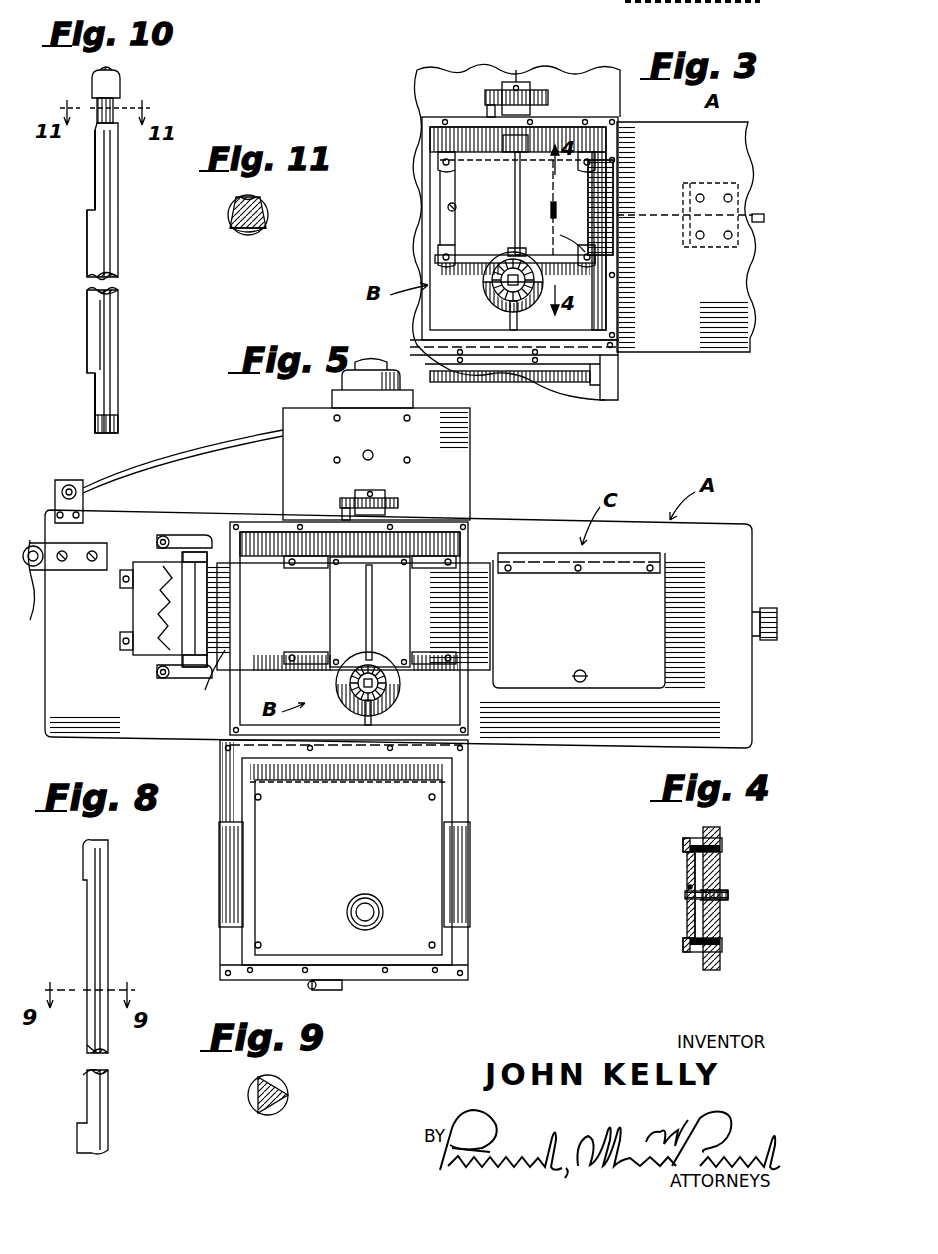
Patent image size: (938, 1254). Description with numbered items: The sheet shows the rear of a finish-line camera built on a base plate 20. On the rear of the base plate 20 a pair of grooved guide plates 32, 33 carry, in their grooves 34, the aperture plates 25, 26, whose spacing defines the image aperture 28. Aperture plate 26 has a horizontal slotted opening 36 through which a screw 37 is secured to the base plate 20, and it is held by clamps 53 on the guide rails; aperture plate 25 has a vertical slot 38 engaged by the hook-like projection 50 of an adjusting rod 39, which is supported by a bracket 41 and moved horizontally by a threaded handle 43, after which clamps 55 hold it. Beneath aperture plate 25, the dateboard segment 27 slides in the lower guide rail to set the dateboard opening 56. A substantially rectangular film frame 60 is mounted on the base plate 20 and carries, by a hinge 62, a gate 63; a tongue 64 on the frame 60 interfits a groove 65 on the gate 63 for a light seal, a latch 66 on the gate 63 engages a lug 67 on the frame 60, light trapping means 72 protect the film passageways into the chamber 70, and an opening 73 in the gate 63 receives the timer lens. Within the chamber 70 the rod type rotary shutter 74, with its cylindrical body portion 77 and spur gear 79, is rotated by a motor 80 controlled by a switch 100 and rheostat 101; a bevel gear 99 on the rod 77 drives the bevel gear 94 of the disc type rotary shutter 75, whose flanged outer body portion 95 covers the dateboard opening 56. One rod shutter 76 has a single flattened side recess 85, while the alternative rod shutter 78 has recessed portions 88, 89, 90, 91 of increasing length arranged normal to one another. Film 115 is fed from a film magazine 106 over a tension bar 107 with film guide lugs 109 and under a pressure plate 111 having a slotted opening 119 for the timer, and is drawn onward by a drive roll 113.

In FIG. 3, the base plate 20 is at (680, 352).
In FIG. 4, the base plate 20 is at (716, 962).
In FIG. 3, the aperture plate 25 is at (600, 195).
In FIG. 4, the aperture plate 25 is at (688, 912).
In FIG. 3, the aperture plate 26 is at (440, 228).
In FIG. 3, the dateboard segment 27 is at (575, 254).
In FIG. 4, the dateboard segment 27 is at (688, 930).
In FIG. 3, the image aperture 28 is at (515, 208).
In FIG. 3, the guide plate 32 is at (460, 162).
In FIG. 4, the guide plate 32 is at (695, 838).
In FIG. 3, the guide plate 33 is at (470, 256).
In FIG. 4, the guide plate 33 is at (698, 952).
In FIG. 4, the groove 34 is at (686, 850).
In FIG. 3, the slotted opening 36 is at (462, 197).
In FIG. 3, the screw 37 is at (450, 212).
In FIG. 3, the vertical slot 38 is at (550, 206).
In FIG. 4, the vertical slot 38 is at (686, 895).
In FIG. 3, the adjusting rod 39 is at (760, 222).
In FIG. 3, the bracket 41 is at (733, 182).
In FIG. 5, the handle 43 is at (768, 608).
In FIG. 4, the hook-like projection 50 is at (720, 900).
In FIG. 3, the clamp 53 is at (440, 160).
In FIG. 3, the clamp 55 is at (598, 162).
In FIG. 3, the dateboard opening 56 is at (512, 248).
In FIG. 3, the film frame 60 is at (428, 120).
In FIG. 5, the film frame 60 is at (248, 522).
In FIG. 3, the hinge 62 is at (610, 362).
In FIG. 5, the hinge 62 is at (430, 748).
In FIG. 3, the gate 63 is at (565, 384).
In FIG. 5, the gate 63 is at (295, 978).
In FIG. 3, the tongue 64 is at (608, 302).
In FIG. 5, the tongue 64 is at (282, 528).
In FIG. 3, the groove 65 is at (600, 400).
In FIG. 5, the groove 65 is at (238, 802).
In FIG. 5, the latch 66 is at (325, 990).
In FIG. 3, the lug 67 is at (486, 112).
In FIG. 5, the lug 67 is at (342, 514).
In FIG. 3, the chamber 70 is at (430, 316).
In FIG. 5, the chamber 70 is at (310, 806).
In FIG. 3, the light trapping means 72 is at (612, 246).
In FIG. 5, the light trapping means 72 is at (228, 867).
In FIG. 5, the opening 73 is at (362, 895).
In FIG. 10, the rod type rotary shutter 74 is at (120, 224).
In FIG. 8, the rod type rotary shutter 74 is at (70, 925).
In FIG. 5, the disc type rotary shutter 75 is at (422, 702).
In FIG. 8, the rod shutter 76 is at (100, 960).
In FIG. 10, the cylindrical body portion 77 is at (118, 272).
In FIG. 11, the cylindrical body portion 77 is at (240, 200).
In FIG. 3, the cylindrical body portion 77 is at (517, 314).
In FIG. 5, the cylindrical body portion 77 is at (372, 714).
In FIG. 8, the cylindrical body portion 77 is at (108, 1045).
In FIG. 9, the cylindrical body portion 77 is at (270, 1115).
In FIG. 10, the rod shutter 78 is at (105, 339).
In FIG. 3, the spur gear 79 is at (490, 96).
In FIG. 5, the spur gear 79 is at (348, 498).
In FIG. 5, the motor 80 is at (400, 383).
In FIG. 8, the flattened side recess 85 is at (82, 1074).
In FIG. 9, the flattened side recess 85 is at (249, 1105).
In FIG. 10, the recessed portion 88 is at (118, 82).
In FIG. 11, the recessed portion 88 is at (268, 228).
In FIG. 10, the recessed portion 89 is at (103, 148).
In FIG. 11, the recessed portion 89 is at (255, 237).
In FIG. 10, the recessed portion 90 is at (96, 188).
In FIG. 11, the recessed portion 90 is at (229, 215).
In FIG. 10, the recessed portion 91 is at (94, 264).
In FIG. 11, the recessed portion 91 is at (255, 198).
In FIG. 3, the bevel gear 94 is at (492, 280).
In FIG. 5, the bevel gear 94 is at (356, 692).
In FIG. 3, the flanged outer body portion 95 is at (486, 294).
In FIG. 5, the flanged outer body portion 95 is at (352, 703).
In FIG. 3, the bevel gear 99 is at (500, 300).
In FIG. 5, the switch 100 is at (40, 543).
In FIG. 5, the rheostat 101 is at (66, 480).
In FIG. 5, the film magazine 106 is at (655, 640).
In FIG. 5, the film guiding tension bar 107 is at (470, 560).
In FIG. 5, the film guide lug 109 is at (296, 562).
In FIG. 5, the pressure plate 111 is at (355, 616).
In FIG. 5, the drive roll 113 is at (195, 607).
In FIG. 5, the film 115 is at (222, 690).
In FIG. 5, the slotted opening 119 is at (349, 616).